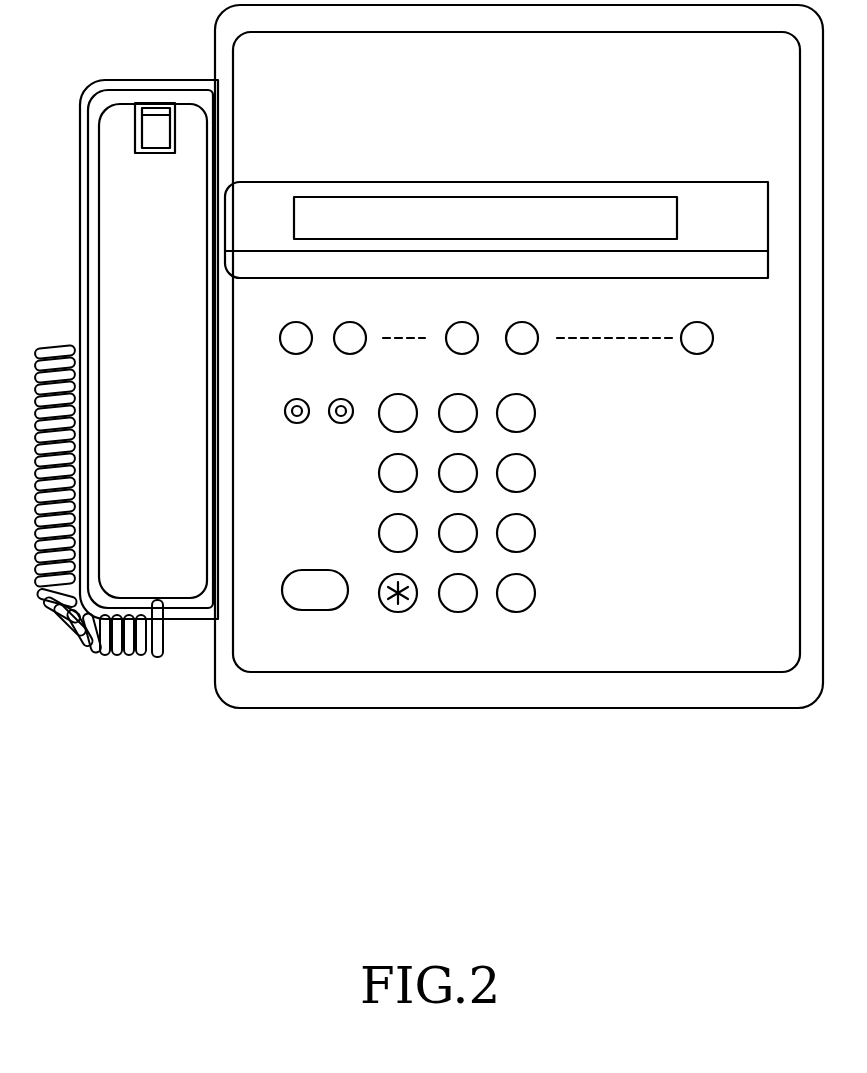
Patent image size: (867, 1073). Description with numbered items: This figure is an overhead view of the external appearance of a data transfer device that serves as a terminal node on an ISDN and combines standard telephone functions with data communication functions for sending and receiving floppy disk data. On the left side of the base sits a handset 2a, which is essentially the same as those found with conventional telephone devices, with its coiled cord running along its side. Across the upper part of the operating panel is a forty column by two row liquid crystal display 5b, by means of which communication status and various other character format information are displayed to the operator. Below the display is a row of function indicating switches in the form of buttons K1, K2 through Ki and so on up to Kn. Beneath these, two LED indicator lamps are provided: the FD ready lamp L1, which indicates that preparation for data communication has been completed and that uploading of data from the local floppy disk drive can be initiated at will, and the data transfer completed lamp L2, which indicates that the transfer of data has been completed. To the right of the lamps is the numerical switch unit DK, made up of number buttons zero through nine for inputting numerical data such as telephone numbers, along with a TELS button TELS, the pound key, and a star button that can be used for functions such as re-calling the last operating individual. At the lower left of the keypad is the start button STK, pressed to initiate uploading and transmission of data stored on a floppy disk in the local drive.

The liquid crystal display 5b is at (567, 197).
The handset 2a is at (168, 364).
The function indicating switch K1 is at (280, 335).
The function indicating switch K2 is at (334, 333).
The function indicating switch Ki is at (465, 353).
The function indicating switch Kn is at (700, 353).
The FD ready lamp L1 is at (295, 423).
The data transfer completed lamp L2 is at (338, 423).
The numerical switch unit DK is at (535, 386).
The start button STK is at (330, 610).
The TELS button TELS is at (508, 612).